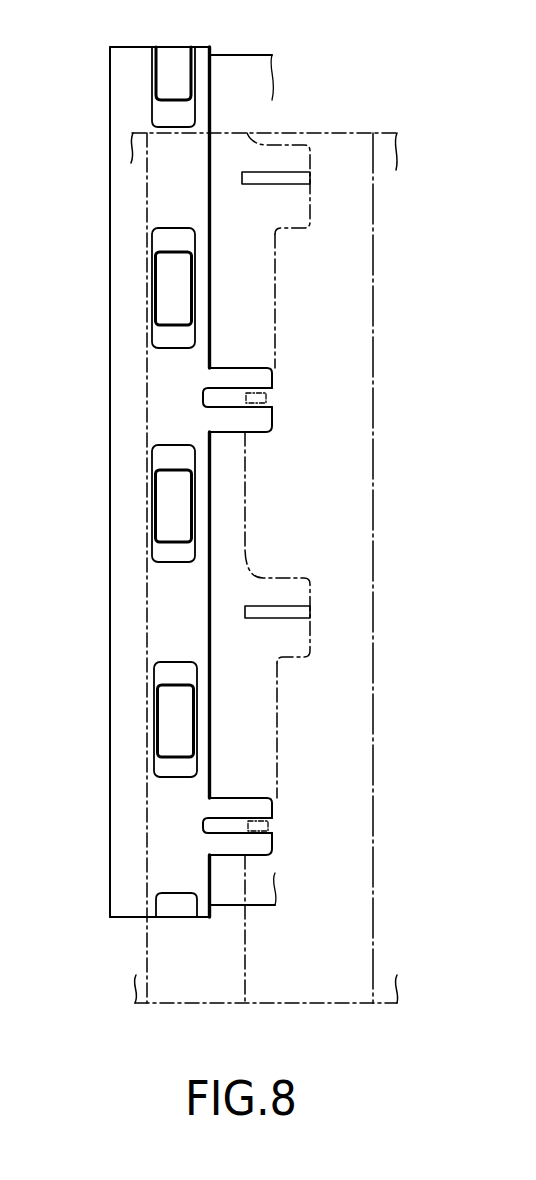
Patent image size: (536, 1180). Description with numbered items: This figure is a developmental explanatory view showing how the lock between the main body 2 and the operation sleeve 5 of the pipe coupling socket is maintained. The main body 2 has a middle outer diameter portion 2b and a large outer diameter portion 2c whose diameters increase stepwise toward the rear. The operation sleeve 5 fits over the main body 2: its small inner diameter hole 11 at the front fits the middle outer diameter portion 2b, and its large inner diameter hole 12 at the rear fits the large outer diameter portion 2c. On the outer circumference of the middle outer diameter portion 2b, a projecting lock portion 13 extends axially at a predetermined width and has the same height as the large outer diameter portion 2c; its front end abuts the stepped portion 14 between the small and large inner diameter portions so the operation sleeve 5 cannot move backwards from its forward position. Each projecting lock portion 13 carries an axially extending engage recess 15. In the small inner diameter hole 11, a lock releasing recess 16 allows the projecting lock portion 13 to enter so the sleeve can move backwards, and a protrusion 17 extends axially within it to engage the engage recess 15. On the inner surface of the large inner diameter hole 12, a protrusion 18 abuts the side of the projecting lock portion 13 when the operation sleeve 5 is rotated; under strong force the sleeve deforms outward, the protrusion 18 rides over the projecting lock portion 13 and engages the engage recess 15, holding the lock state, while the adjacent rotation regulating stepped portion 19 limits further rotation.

The main body 2 is at (106, 117).
The middle outer diameter portion 2b is at (230, 68).
The large outer diameter portion 2c is at (122, 297).
The operation sleeve 5 is at (346, 499).
The small inner diameter hole 11 is at (357, 960).
The large inner diameter hole 12 is at (208, 975).
The projecting lock portion 13 is at (218, 373).
The stepped portion 14 is at (276, 697).
The engage recess 15 is at (233, 395).
The lock releasing recess 16 is at (289, 163).
The protrusion 17 is at (286, 185).
The protrusion 18 is at (255, 433).
The rotation regulating stepped portion 19 is at (242, 553).